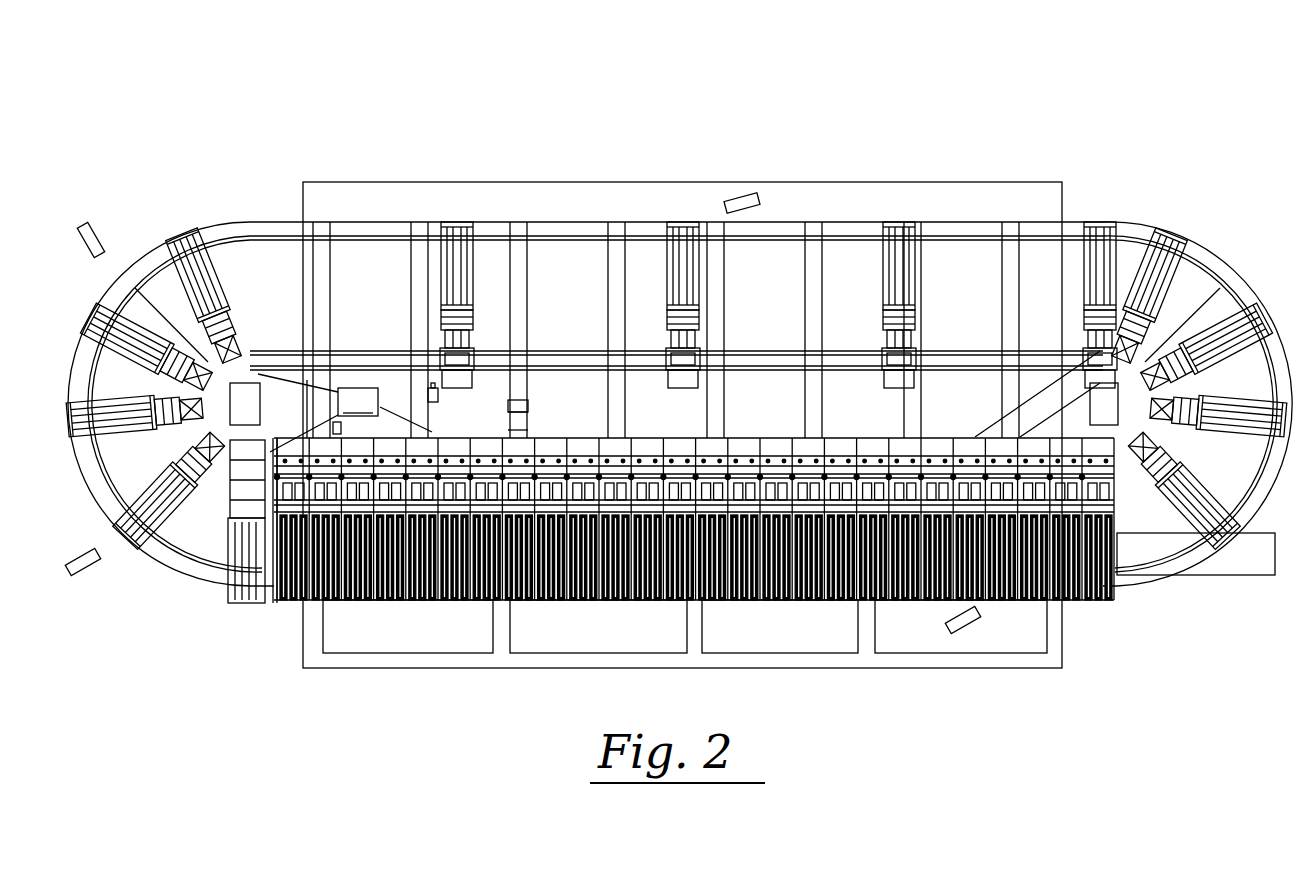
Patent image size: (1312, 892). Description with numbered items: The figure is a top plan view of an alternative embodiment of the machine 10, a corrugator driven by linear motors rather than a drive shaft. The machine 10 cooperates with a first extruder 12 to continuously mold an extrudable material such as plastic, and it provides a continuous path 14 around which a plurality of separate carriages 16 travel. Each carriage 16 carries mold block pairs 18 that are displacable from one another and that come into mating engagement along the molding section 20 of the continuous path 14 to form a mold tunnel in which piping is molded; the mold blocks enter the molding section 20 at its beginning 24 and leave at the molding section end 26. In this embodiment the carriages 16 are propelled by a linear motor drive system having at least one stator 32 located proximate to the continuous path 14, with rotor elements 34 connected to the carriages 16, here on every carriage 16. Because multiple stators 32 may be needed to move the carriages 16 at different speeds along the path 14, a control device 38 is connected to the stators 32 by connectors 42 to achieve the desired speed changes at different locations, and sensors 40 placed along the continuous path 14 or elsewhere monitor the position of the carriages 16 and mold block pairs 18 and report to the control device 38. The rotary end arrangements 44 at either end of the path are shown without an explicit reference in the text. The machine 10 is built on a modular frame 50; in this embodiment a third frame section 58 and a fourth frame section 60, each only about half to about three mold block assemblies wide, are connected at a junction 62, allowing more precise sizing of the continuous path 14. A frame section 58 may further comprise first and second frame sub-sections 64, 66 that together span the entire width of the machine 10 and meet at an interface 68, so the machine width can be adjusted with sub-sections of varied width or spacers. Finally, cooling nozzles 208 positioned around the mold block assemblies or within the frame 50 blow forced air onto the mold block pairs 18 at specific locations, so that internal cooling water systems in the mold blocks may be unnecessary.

The machine 10 is at (253, 117).
The first extruder 12 is at (1193, 560).
The continuous path 14 is at (350, 362).
The carriages 16 is at (883, 372).
The mold block pairs 18 is at (458, 207).
The molding section 20 is at (748, 602).
The beginning of molding section 24 is at (1117, 595).
The molding section end 26 is at (272, 603).
The stator 32 is at (957, 362).
The rotor elements 34 is at (470, 380).
The control device 38 is at (358, 402).
The sensors 40 is at (436, 402).
The connectors 42 is at (397, 393).
The rotary arm assembly 44 is at (676, 388).
The frame 50 is at (776, 263).
The third frame section 58 is at (513, 221).
The fourth frame section 60 is at (557, 225).
The junction 62 is at (524, 262).
The first frame sub-section 64 is at (517, 382).
The second frame sub-section 66 is at (522, 424).
The interface 68 is at (515, 406).
The cooling nozzles 208 is at (98, 228).